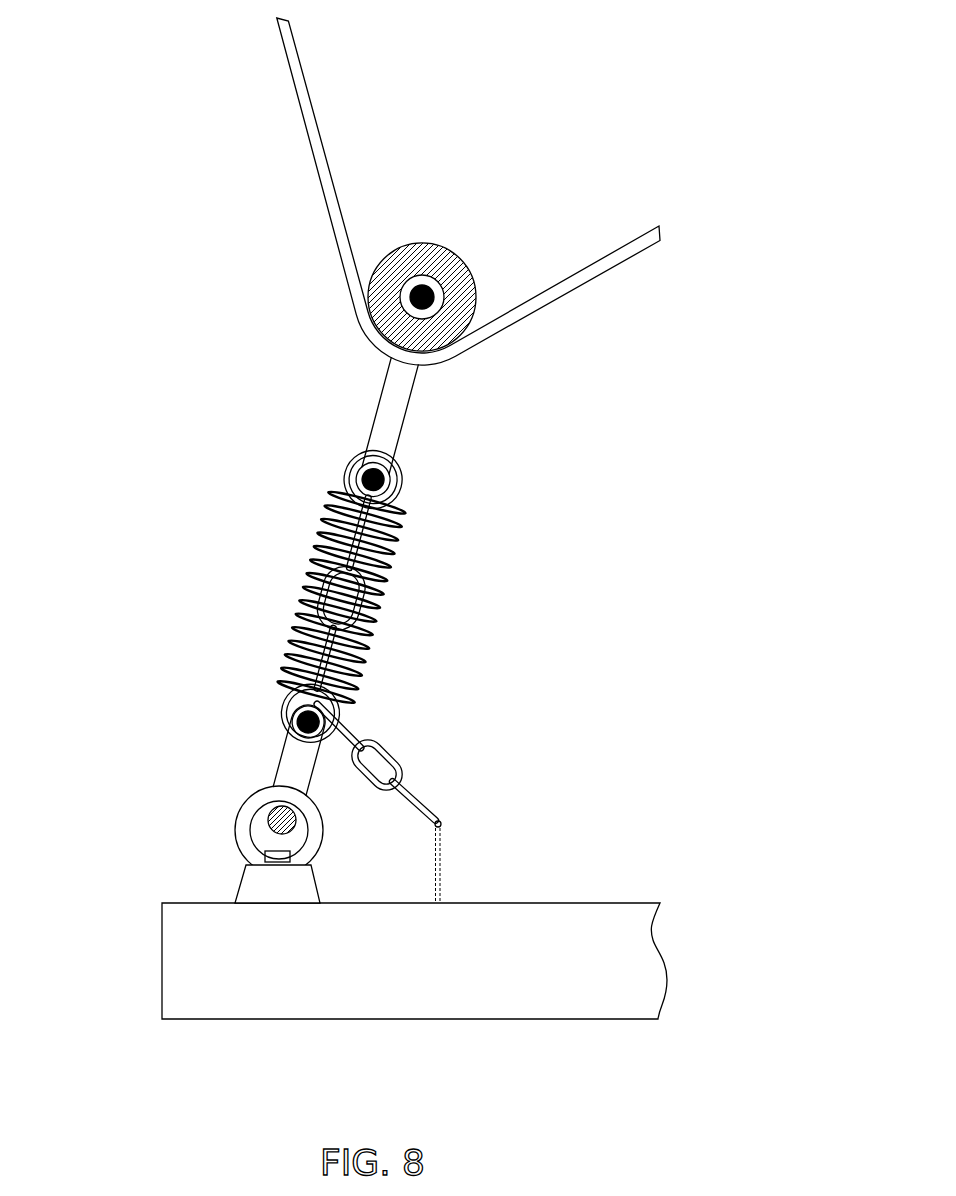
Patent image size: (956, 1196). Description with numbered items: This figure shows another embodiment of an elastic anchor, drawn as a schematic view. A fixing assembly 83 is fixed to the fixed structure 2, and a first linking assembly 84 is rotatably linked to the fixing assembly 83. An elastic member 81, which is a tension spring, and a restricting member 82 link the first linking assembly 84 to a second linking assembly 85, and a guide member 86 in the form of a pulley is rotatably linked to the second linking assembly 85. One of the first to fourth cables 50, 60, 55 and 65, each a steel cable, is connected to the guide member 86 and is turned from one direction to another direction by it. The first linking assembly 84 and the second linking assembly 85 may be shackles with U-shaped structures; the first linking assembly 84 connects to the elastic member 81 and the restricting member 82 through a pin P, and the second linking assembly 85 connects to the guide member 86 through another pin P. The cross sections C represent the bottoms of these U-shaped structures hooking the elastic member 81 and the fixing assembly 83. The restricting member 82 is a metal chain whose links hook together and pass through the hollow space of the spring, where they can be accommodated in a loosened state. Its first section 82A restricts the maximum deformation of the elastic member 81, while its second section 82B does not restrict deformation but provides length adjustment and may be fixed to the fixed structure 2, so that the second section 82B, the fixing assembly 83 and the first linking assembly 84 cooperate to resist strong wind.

The fixed structure 2 is at (177, 960).
The first cable 50 is at (356, 191).
The third cable 55 is at (356, 191).
The second cable 60 is at (356, 191).
The fourth cable 65 is at (318, 178).
The elastic member 81 is at (307, 570).
The restricting member 82 is at (446, 696).
The first section 82A is at (303, 595).
The second section 82B is at (388, 750).
The fixing assembly 83 is at (243, 852).
The first linking assembly 84 is at (290, 775).
The second linking assembly 85 is at (398, 413).
The guide member 86 is at (482, 257).
The pin P is at (423, 288).
The cross section C is at (360, 462).